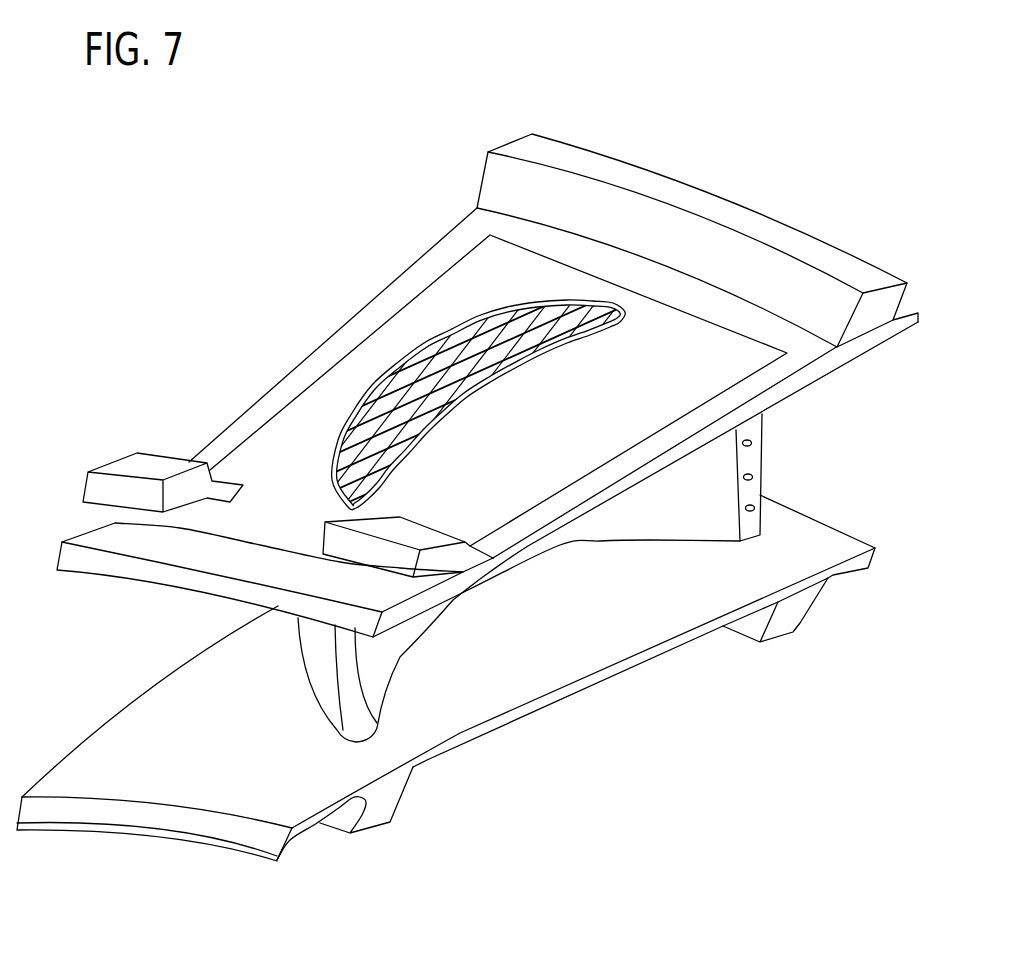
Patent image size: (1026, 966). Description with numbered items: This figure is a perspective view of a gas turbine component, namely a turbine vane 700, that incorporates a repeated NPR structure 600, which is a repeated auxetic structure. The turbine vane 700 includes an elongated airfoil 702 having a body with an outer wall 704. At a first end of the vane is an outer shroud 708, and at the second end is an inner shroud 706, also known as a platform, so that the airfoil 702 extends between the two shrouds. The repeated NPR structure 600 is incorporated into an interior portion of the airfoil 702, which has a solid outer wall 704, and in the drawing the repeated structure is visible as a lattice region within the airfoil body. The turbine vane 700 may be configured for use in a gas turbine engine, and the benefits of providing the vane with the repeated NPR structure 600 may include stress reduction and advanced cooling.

The turbine vane 700 is at (740, 108).
The outer wall 704 is at (421, 338).
The repeated NPR structure 600 is at (393, 417).
The elongated airfoil 702 is at (680, 505).
The outer shroud 708 is at (132, 562).
The inner shroud 706 is at (140, 743).